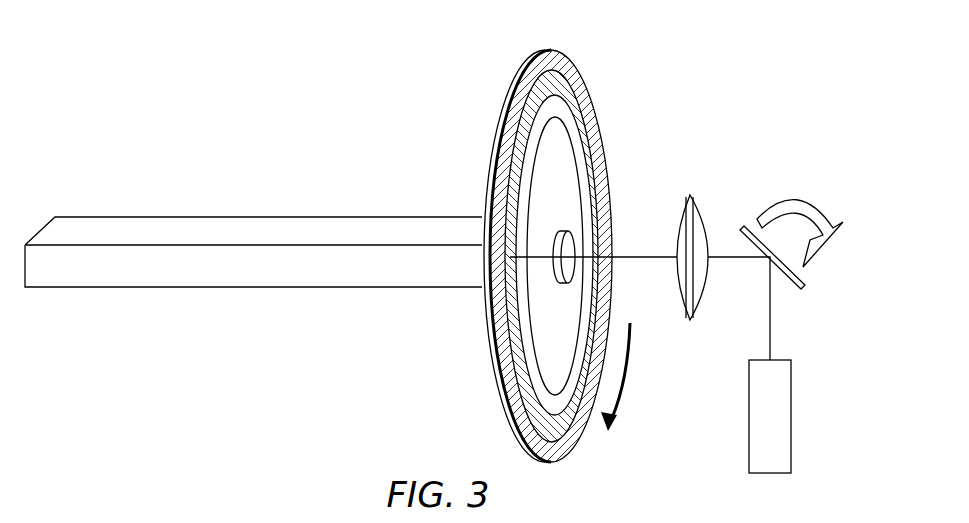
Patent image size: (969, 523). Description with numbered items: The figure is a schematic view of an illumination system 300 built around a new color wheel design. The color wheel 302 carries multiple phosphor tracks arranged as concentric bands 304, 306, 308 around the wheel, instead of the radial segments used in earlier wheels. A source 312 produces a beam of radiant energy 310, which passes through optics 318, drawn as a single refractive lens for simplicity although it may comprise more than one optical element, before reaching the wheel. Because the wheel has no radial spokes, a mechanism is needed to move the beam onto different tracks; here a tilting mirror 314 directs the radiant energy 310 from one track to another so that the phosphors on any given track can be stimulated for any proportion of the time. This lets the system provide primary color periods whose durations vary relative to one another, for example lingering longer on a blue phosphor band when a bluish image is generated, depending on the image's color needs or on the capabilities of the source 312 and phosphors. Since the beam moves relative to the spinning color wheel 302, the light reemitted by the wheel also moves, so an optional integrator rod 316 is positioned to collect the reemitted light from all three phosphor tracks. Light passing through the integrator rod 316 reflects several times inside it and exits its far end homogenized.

The illumination system 300 is at (290, 70).
The color wheel 302 is at (570, 55).
The band 304 is at (577, 75).
The band 306 is at (585, 130).
The band 308 is at (588, 175).
The beam of radiant energy 310 is at (748, 258).
The source 312 is at (792, 420).
The tilting mirror 314 is at (800, 285).
The integrator rod 316 is at (221, 226).
The optics 318 is at (695, 195).